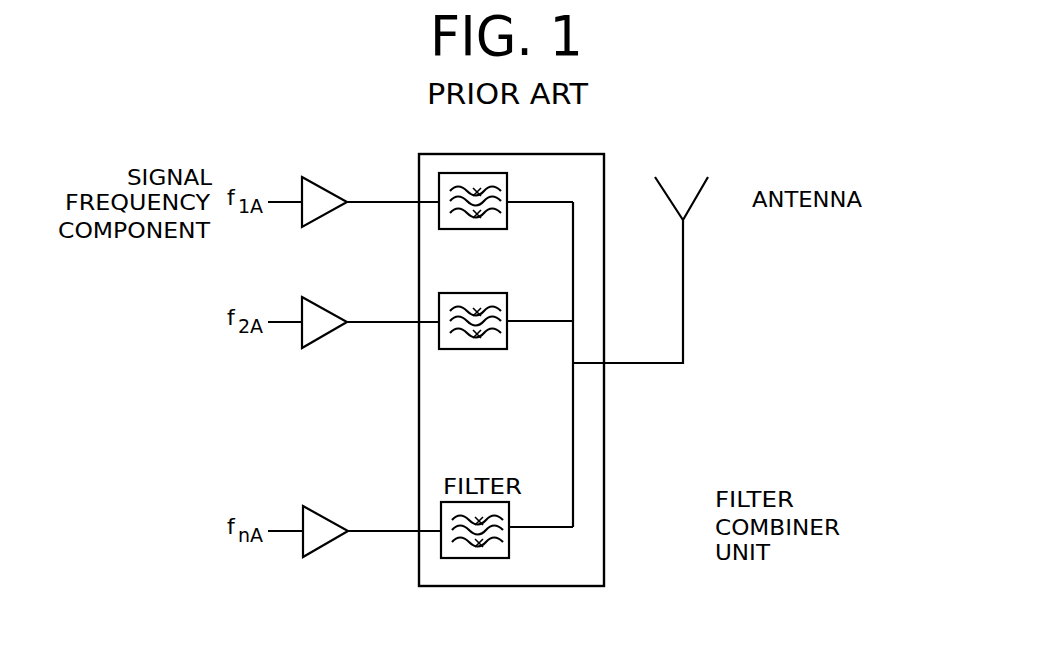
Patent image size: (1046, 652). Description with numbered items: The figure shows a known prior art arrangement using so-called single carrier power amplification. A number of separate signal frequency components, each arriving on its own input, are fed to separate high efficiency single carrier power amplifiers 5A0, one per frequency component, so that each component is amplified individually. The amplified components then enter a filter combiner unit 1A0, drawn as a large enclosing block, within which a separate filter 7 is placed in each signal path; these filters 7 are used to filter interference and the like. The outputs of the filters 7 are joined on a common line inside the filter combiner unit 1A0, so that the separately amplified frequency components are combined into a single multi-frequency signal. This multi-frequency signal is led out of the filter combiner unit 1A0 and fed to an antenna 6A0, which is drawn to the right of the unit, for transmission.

The single carrier power amplifier 5A0 is at (328, 215).
The filter 7 is at (507, 217).
The filter combiner unit 1A0 is at (604, 488).
The antenna 6A0 is at (704, 195).